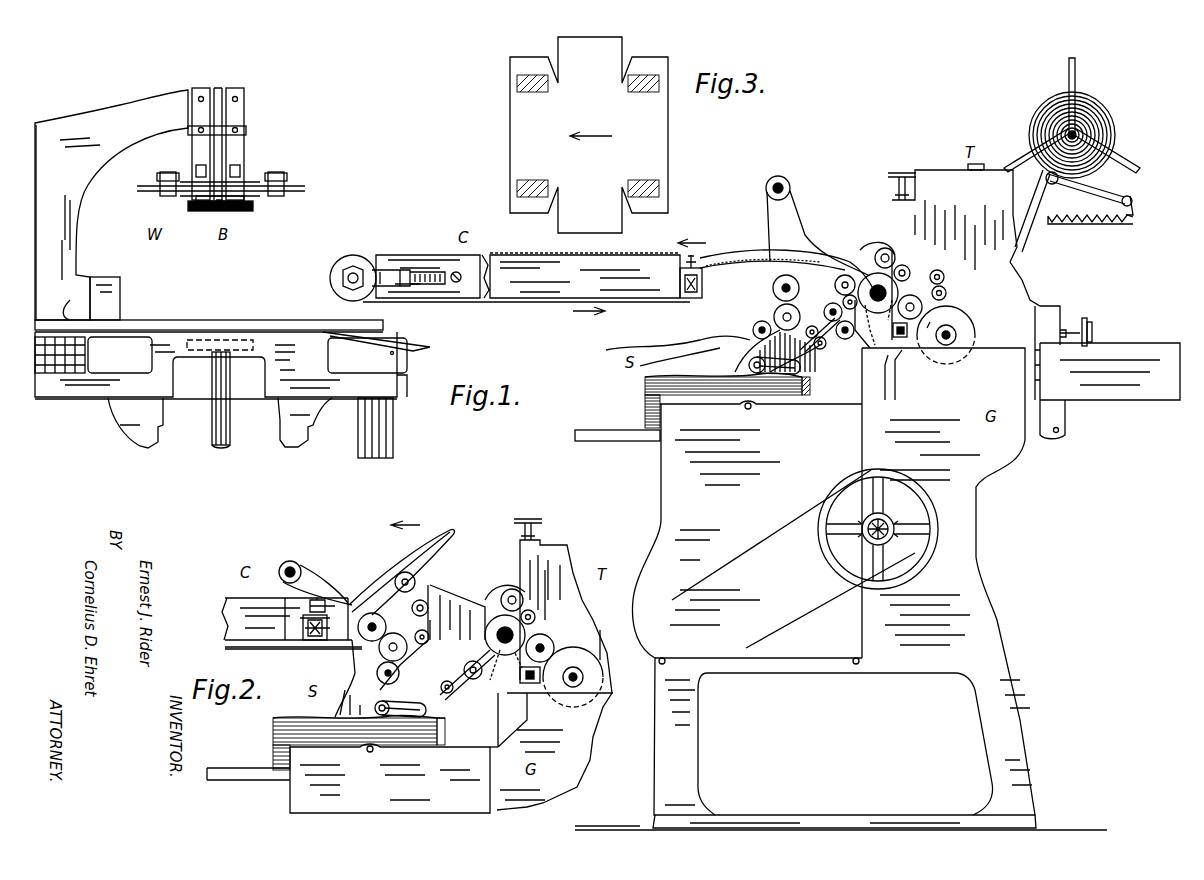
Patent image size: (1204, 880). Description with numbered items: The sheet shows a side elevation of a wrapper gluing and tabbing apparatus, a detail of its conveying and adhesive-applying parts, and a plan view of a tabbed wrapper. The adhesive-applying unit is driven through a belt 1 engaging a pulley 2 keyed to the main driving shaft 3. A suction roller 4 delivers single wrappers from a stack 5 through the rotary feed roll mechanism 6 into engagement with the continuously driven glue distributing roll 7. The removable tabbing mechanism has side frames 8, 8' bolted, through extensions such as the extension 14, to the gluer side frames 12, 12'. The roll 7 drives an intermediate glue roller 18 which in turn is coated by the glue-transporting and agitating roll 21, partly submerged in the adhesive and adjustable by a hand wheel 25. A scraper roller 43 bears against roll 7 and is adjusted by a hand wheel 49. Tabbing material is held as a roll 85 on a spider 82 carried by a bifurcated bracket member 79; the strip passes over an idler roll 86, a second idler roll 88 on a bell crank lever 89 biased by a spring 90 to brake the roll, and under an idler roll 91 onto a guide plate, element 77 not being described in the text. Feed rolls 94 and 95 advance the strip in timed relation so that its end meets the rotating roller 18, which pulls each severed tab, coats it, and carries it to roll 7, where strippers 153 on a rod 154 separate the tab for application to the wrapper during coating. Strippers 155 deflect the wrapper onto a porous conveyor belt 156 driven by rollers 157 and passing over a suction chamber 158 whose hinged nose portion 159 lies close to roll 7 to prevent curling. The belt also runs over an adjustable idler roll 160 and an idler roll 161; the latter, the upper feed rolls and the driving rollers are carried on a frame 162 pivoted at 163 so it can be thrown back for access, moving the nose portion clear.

In FIG. 1, the belt 1 is at (748, 542).
In FIG. 1, the pulley 2 is at (925, 498).
In FIG. 1, the main driving shaft 3 is at (888, 539).
In FIG. 1, the suction roller 4 is at (800, 340).
In FIG. 2, the suction roller 4 is at (393, 703).
In FIG. 1, the stack 5 is at (645, 395).
In FIG. 2, the stack 5 is at (273, 730).
In FIG. 1, the rotary feed roll mechanism 6 is at (845, 345).
In FIG. 2, the rotary feed roll mechanism 6 is at (467, 677).
In FIG. 1, the glue distributing roll 7 is at (872, 312).
In FIG. 2, the glue distributing roll 7 is at (500, 655).
In FIG. 1, the side frame 8 is at (1036, 303).
In FIG. 1, the side frame 8' is at (984, 228).
In FIG. 2, the side frame 8' is at (555, 671).
In FIG. 1, the side frame 12 is at (841, 589).
In FIG. 1, the side frame 12' is at (663, 346).
In FIG. 1, the extension 14 is at (1045, 384).
In FIG. 1, the intermediate glue roller 18 is at (906, 340).
In FIG. 2, the intermediate glue roller 18 is at (552, 640).
In FIG. 1, the glue-transporting and agitating roll 21 is at (965, 340).
In FIG. 2, the glue-transporting and agitating roll 21 is at (590, 680).
In FIG. 1, the hand wheel 25 is at (1092, 325).
In FIG. 1, the roller 43 is at (908, 268).
In FIG. 2, the roller 43 is at (534, 612).
In FIG. 1, the hand wheel 49 is at (902, 173).
In FIG. 2, the hand wheel 49 is at (535, 522).
In FIG. 1, the stud 77 is at (980, 165).
In FIG. 1, the bifurcated bracket member 79 is at (1035, 228).
In FIG. 1, the spider 82 is at (1077, 72).
In FIG. 1, the roll of tabbing material 85 is at (1108, 128).
In FIG. 1, the idler roll 86 is at (1133, 200).
In FIG. 1, the second idler roll 88 is at (1052, 184).
In FIG. 1, the bell crank lever 89 is at (1090, 182).
In FIG. 1, the biasing spring 90 is at (1110, 226).
In FIG. 1, the idler roll 91 is at (959, 235).
In FIG. 1, the feed roll 94 is at (945, 274).
In FIG. 1, the feed roll 95 is at (948, 294).
In FIG. 1, the strippers 153 is at (882, 390).
In FIG. 1, the rod 154 is at (922, 389).
In FIG. 1, the strippers 155 is at (868, 252).
In FIG. 2, the strippers 155 is at (495, 595).
In FIG. 1, the conveyor belt 156 is at (450, 303).
In FIG. 2, the conveyor belt 156 is at (225, 648).
In FIG. 1, the rollers 157 is at (773, 290).
In FIG. 2, the rollers 157 is at (383, 652).
In FIG. 1, the suction chamber 158 is at (625, 298).
In FIG. 2, the suction chamber 158 is at (235, 606).
In FIG. 1, the hinged nose portion 159 is at (742, 262).
In FIG. 2, the hinged nose portion 159 is at (442, 535).
In FIG. 1, the adjustable idler roll 160 is at (350, 262).
In FIG. 1, the idler roll 161 is at (838, 275).
In FIG. 2, the idler roll 161 is at (420, 585).
In FIG. 1, the frame 162 is at (792, 215).
In FIG. 2, the frame 162 is at (312, 578).
In FIG. 1, the pivot 163 is at (752, 331).
In FIG. 2, the pivot 163 is at (399, 676).